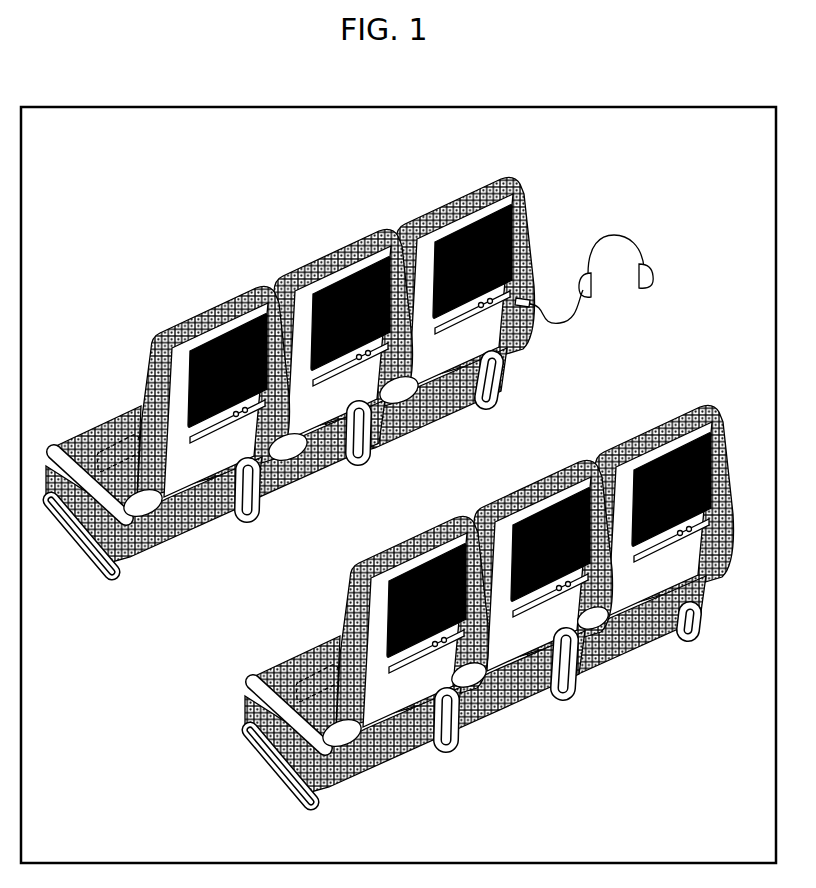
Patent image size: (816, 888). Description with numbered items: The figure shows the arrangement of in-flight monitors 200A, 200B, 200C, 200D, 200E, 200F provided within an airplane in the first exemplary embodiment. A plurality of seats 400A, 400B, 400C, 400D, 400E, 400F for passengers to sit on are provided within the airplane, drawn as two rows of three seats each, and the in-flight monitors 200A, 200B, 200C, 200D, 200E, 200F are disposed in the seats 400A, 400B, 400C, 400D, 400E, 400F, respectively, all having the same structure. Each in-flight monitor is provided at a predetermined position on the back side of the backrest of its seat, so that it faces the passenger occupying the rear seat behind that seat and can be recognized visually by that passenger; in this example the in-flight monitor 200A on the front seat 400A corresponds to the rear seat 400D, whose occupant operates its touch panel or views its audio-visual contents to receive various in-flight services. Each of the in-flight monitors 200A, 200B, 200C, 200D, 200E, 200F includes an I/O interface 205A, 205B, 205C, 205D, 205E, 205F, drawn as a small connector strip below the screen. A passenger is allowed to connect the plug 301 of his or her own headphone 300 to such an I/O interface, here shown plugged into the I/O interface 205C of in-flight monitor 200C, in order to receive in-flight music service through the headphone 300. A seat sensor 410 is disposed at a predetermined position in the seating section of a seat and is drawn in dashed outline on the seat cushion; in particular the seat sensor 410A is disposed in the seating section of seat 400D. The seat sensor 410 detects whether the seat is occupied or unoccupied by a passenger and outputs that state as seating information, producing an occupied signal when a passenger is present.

The in-flight monitor 200A is at (193, 347).
The in-flight monitor 200B is at (331, 300).
The in-flight monitor 200C is at (453, 243).
The in-flight monitor 200D is at (423, 575).
The in-flight monitor 200E is at (547, 518).
The in-flight monitor 200F is at (664, 467).
The I/O interface 205A is at (237, 417).
The I/O interface 205B is at (385, 404).
The I/O interface 205C is at (503, 334).
The I/O interface 205D is at (420, 713).
The I/O interface 205E is at (550, 658).
The I/O interface 205F is at (699, 552).
The seat 400A is at (168, 398).
The seat 400B is at (313, 340).
The seat 400C is at (431, 292).
The seat 400D is at (367, 667).
The seat 400E is at (491, 609).
The seat 400F is at (627, 545).
The seat sensor 410 is at (110, 437).
The seat sensor 410A is at (300, 654).
The headphone 300 is at (635, 232).
The plug 301 is at (522, 302).